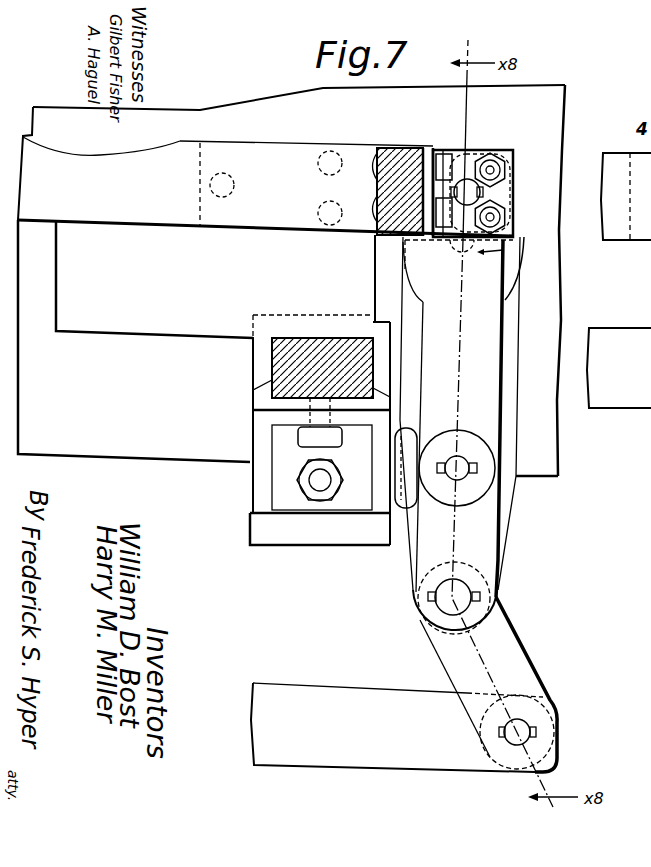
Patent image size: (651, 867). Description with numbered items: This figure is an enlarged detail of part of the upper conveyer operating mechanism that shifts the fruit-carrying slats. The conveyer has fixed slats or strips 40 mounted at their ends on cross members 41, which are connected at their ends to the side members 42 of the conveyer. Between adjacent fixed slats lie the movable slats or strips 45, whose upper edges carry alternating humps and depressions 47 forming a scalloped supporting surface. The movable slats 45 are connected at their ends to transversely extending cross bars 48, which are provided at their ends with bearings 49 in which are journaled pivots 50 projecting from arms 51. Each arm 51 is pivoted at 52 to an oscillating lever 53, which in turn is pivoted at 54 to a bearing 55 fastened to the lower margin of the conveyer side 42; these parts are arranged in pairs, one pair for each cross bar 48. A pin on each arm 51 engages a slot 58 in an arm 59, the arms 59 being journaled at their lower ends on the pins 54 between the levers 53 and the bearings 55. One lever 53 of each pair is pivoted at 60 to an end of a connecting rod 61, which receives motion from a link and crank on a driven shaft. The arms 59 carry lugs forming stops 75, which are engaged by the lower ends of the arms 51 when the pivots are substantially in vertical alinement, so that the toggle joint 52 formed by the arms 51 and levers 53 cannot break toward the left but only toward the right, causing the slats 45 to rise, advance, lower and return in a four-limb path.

The slats or strips 40 is at (173, 316).
The cross members 41 is at (258, 365).
The side members 42 is at (98, 443).
The movable slats or strips 45 is at (262, 162).
The depressions 47 is at (109, 152).
The cross bars 48 is at (398, 150).
The bearings 49 is at (506, 158).
The pivots 50 is at (472, 197).
The arms 51 is at (485, 330).
The pivot (toggle joint) 52 is at (462, 470).
The oscillating levers 53 is at (507, 652).
The pivot (pin) 54 is at (453, 603).
The bearings 55 is at (505, 530).
The slot 58 is at (515, 248).
The arm 59 is at (513, 270).
The pivot 60 is at (531, 731).
The connecting rod 61 is at (318, 694).
The stops 75 is at (410, 440).